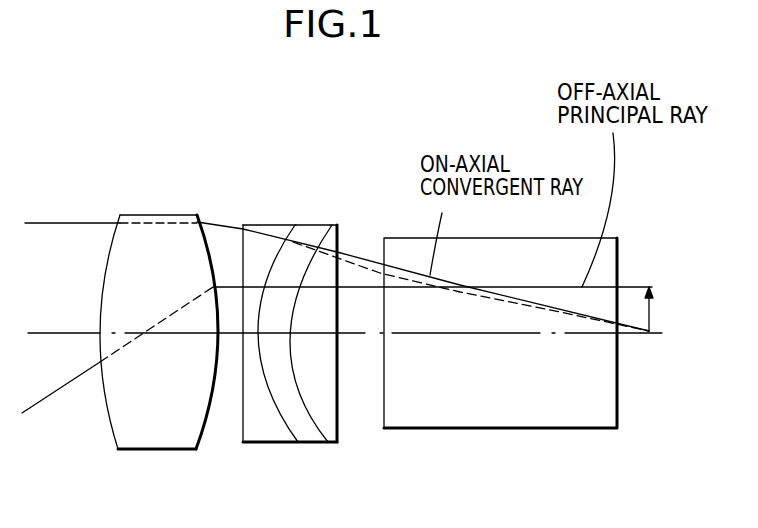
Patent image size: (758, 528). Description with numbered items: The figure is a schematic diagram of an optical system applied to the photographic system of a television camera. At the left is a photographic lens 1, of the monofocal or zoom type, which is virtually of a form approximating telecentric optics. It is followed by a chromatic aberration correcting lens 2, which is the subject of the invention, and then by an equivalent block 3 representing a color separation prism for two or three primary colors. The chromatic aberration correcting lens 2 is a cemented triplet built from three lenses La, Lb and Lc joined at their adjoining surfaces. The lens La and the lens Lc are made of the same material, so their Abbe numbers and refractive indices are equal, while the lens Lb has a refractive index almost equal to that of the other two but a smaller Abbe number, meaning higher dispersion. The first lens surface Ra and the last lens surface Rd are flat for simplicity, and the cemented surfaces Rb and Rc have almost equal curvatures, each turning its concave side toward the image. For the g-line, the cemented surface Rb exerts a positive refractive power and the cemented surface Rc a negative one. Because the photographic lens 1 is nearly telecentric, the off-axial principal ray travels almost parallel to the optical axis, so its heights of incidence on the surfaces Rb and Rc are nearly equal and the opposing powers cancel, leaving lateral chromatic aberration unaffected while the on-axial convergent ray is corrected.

The photographic lens 1 is at (153, 440).
The chromatic aberration correcting lens 2 is at (300, 312).
The color separation prism 3 is at (615, 458).
The first lens surface Ra is at (243, 234).
The cemented lens surface Rb is at (297, 237).
The cemented surface Rc is at (326, 237).
The last lens surface Rd is at (356, 240).
The lens La is at (272, 233).
The lens Lb is at (312, 237).
The lens Lc is at (346, 240).